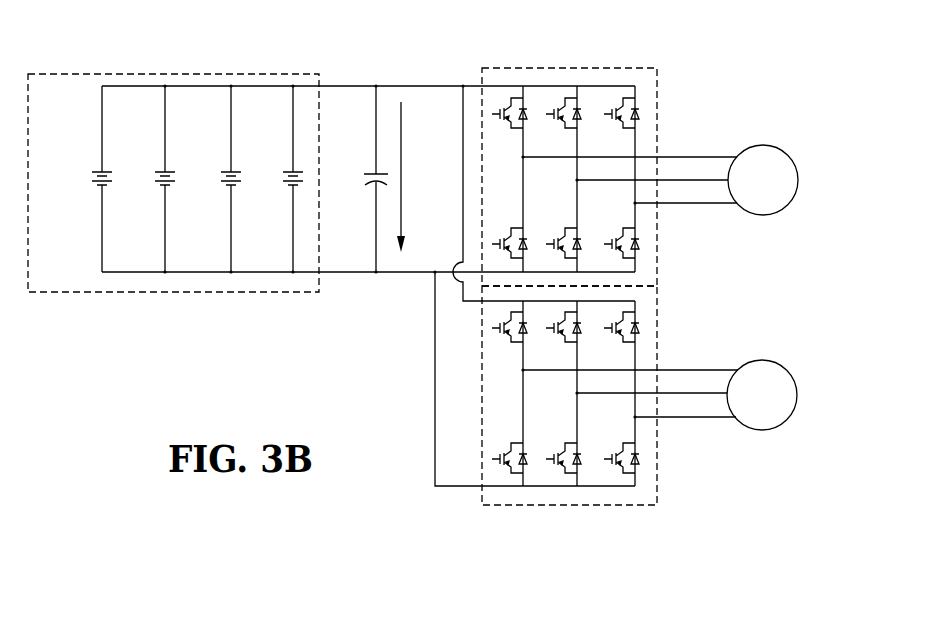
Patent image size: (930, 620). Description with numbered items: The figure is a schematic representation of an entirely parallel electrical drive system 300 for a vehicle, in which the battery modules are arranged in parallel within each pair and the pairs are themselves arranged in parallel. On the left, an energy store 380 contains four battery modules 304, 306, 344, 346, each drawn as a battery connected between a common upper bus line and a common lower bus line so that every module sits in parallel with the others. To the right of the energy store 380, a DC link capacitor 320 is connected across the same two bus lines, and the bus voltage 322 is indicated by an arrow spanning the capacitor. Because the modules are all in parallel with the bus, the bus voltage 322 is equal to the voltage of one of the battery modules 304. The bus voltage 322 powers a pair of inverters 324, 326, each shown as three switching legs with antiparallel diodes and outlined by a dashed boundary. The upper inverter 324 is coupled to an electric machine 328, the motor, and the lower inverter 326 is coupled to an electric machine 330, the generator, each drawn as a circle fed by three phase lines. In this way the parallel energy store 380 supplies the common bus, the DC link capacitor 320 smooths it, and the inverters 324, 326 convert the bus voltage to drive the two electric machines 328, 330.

The parallel electrical drive system 300 is at (708, 70).
The battery module 304 is at (96, 186).
The battery module 306 is at (160, 171).
The battery module 344 is at (226, 171).
The battery module 346 is at (288, 171).
The DC link capacitor 320 is at (372, 174).
The bus voltage Vdc 322 is at (402, 146).
The inverter 324 is at (572, 48).
The inverter 326 is at (572, 527).
The electric machine 328 is at (760, 146).
The electric machine 330 is at (760, 360).
The energy store 380 is at (169, 313).